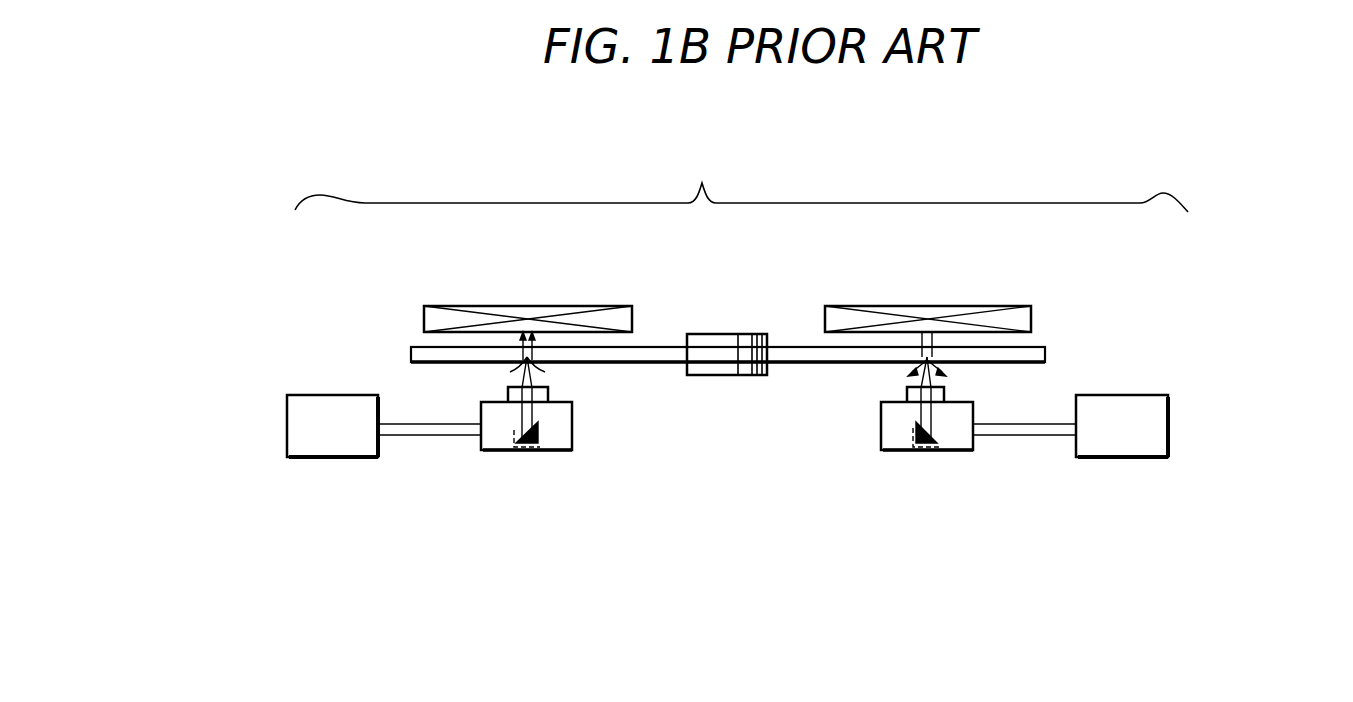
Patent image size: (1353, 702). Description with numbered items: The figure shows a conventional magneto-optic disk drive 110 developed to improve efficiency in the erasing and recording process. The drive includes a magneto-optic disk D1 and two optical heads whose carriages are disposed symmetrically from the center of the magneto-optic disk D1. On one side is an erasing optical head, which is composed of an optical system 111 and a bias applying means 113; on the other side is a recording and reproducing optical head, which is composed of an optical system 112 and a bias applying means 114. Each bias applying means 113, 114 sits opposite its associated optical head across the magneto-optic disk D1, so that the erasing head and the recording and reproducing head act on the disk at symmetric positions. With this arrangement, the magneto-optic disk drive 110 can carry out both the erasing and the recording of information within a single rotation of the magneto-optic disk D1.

The magneto-optic disk drive 110 is at (691, 190).
The optical system 111 is at (1140, 396).
The optical system 112 is at (322, 396).
The bias applying means 113 is at (921, 306).
The bias applying means 114 is at (527, 306).
The magneto-optic disk D1 is at (1046, 352).